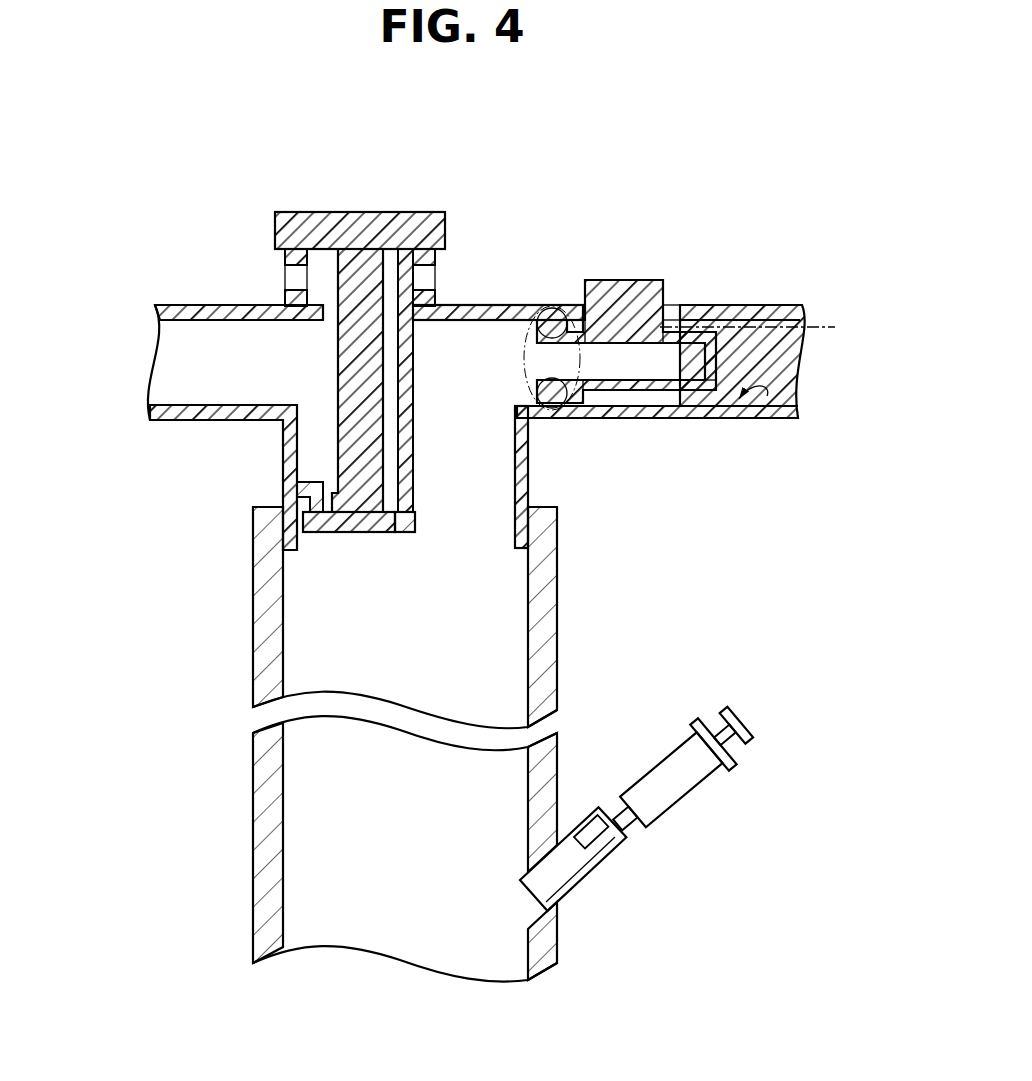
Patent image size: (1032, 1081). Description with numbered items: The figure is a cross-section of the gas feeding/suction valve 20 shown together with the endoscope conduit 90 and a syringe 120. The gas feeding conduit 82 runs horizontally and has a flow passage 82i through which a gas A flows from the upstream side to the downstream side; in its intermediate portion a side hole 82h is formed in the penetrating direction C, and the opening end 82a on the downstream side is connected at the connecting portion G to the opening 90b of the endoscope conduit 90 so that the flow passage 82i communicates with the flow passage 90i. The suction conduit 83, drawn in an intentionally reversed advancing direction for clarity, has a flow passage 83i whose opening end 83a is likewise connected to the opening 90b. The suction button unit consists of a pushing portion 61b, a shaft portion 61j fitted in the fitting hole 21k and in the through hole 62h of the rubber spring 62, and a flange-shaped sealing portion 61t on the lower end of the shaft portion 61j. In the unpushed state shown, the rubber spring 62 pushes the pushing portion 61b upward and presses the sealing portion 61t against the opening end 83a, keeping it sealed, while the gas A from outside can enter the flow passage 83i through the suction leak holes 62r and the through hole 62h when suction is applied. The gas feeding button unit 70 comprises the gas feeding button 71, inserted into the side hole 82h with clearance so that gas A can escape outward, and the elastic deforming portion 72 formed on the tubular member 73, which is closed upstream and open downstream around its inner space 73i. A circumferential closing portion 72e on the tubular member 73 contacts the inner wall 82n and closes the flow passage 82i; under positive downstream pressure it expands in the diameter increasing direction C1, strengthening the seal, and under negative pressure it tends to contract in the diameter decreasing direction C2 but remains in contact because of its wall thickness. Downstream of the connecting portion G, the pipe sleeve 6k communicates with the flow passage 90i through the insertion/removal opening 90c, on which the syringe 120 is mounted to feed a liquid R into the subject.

The gas feeding/suction valve 20 is at (140, 270).
The pushing portion 61b is at (405, 222).
The shaft portion 61j is at (350, 423).
The sealing portion 61t is at (350, 527).
The rubber spring 62 is at (436, 256).
The suction leak holes 62r is at (283, 280).
The through hole 62h is at (391, 271).
The fitting hole 21k is at (292, 472).
The suction conduit 83 is at (197, 421).
The flow passage 83i is at (213, 383).
The opening end 83a is at (394, 518).
The gas feeding conduit 82 is at (713, 419).
The opening end 82a is at (455, 530).
The side hole 82h is at (675, 302).
The flow passage 82i is at (764, 354).
The inner wall 82n is at (767, 419).
The gas feeding button unit 70 is at (720, 362).
The gas feeding button 71 is at (628, 287).
The deforming portion 72 is at (533, 305).
The closing portion 72e is at (568, 317).
The tubular member 73 is at (615, 391).
The inner space 73i is at (648, 365).
The endoscope conduit 90 is at (551, 644).
The flow passage 90i is at (356, 834).
The opening 90b is at (474, 497).
The insertion/removal opening 90c is at (629, 836).
The pipe sleeve 6k is at (603, 867).
The syringe 120 is at (681, 788).
The gas A is at (400, 280).
The penetrating direction C is at (680, 208).
The diameter increasing direction C1 is at (552, 353).
The diameter decreasing direction C2 is at (568, 362).
The connecting portion G is at (560, 535).
The liquid R is at (608, 830).